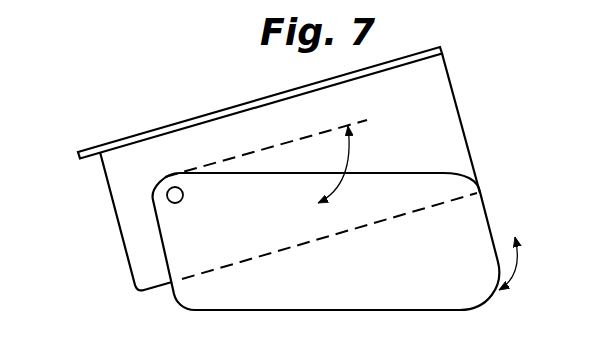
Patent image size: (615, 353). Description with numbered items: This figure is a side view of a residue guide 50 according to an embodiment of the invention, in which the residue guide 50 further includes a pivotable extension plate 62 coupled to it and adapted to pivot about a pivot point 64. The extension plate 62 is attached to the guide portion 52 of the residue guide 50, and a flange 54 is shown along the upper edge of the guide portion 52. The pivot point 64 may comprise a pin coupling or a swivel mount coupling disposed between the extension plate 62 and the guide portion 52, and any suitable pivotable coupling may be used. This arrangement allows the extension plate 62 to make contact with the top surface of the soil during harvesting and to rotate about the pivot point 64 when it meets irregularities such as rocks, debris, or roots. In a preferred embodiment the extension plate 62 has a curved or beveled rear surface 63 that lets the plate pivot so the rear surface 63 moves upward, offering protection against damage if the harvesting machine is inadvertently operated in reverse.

The residue guide 50 is at (116, 112).
The guide portion 52 is at (435, 107).
The flange 54 is at (88, 160).
The pivotable extension plate 62 is at (273, 241).
The rear surface 63 is at (488, 308).
The pivot point 64 is at (168, 195).